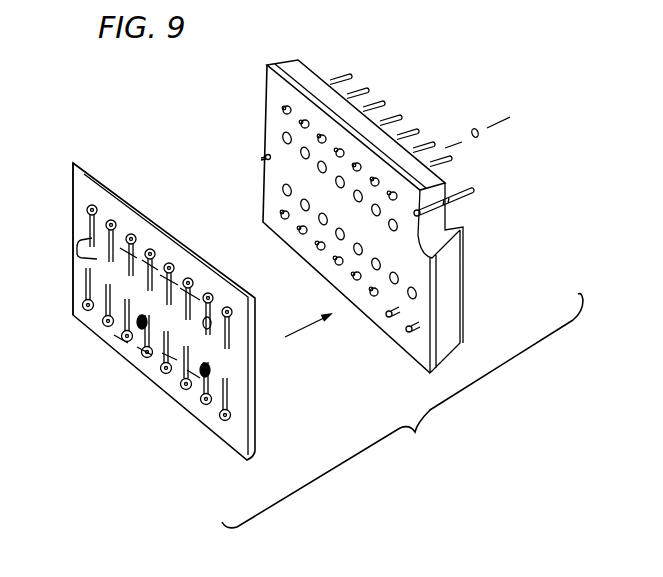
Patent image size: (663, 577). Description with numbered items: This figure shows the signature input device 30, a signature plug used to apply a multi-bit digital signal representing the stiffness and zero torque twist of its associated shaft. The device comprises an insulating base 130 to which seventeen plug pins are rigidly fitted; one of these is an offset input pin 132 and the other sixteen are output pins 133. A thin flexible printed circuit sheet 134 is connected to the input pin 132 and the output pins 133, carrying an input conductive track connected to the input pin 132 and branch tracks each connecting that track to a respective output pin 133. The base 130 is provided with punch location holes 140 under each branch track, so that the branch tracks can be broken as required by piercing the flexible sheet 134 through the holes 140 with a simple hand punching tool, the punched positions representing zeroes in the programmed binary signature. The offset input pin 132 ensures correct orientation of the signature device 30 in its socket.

The signature input device 30 is at (112, 117).
The insulating base 130 is at (452, 293).
The input pin 132 is at (262, 158).
The output pins 133 is at (352, 84).
The flexible printed circuit sheet 134 is at (233, 436).
The punch location holes 140 is at (283, 191).